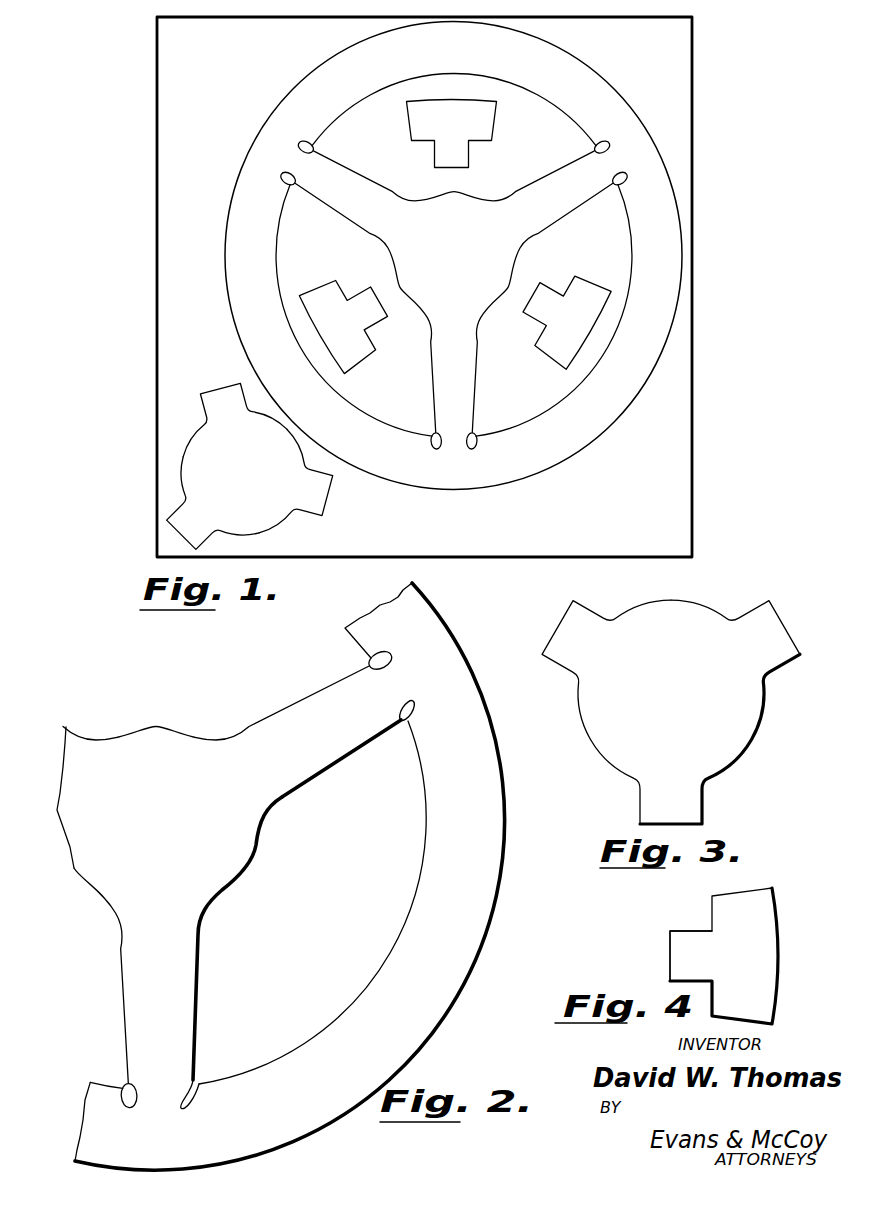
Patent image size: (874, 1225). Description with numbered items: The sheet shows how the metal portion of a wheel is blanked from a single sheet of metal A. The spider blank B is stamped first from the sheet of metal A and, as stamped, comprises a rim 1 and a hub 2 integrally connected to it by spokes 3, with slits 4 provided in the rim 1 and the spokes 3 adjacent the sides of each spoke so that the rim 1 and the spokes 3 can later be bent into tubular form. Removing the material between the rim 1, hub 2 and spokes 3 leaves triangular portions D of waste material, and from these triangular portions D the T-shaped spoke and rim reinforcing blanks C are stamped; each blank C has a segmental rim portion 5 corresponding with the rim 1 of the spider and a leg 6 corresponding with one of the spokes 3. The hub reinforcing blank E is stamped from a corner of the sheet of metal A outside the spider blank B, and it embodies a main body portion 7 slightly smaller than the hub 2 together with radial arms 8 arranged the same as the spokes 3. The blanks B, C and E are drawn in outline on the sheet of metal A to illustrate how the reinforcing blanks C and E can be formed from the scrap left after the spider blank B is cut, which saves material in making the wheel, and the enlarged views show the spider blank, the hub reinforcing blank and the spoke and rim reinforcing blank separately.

In FIG. 1, the sheet of metal A is at (682, 495).
In FIG. 1, the spider blank B is at (563, 448).
In FIG. 1, the spoke and rim reinforcement blank C is at (580, 288).
In FIG. 4, the spoke and rim reinforcement blank C is at (741, 947).
In FIG. 1, the triangular portions of waste material D is at (453, 295).
In FIG. 1, the hub reinforcing blank E is at (241, 473).
In FIG. 3, the hub reinforcing blank E is at (670, 693).
In FIG. 2, the rim 1 is at (485, 785).
In FIG. 2, the hub 2 is at (255, 862).
In FIG. 2, the spokes 3 is at (310, 766).
In FIG. 2, the slits 4 is at (401, 723).
In FIG. 4, the segmental rim portion 5 is at (770, 905).
In FIG. 4, the leg 6 is at (680, 938).
In FIG. 3, the main body portion 7 is at (670, 693).
In FIG. 3, the radial arms 8 is at (788, 650).